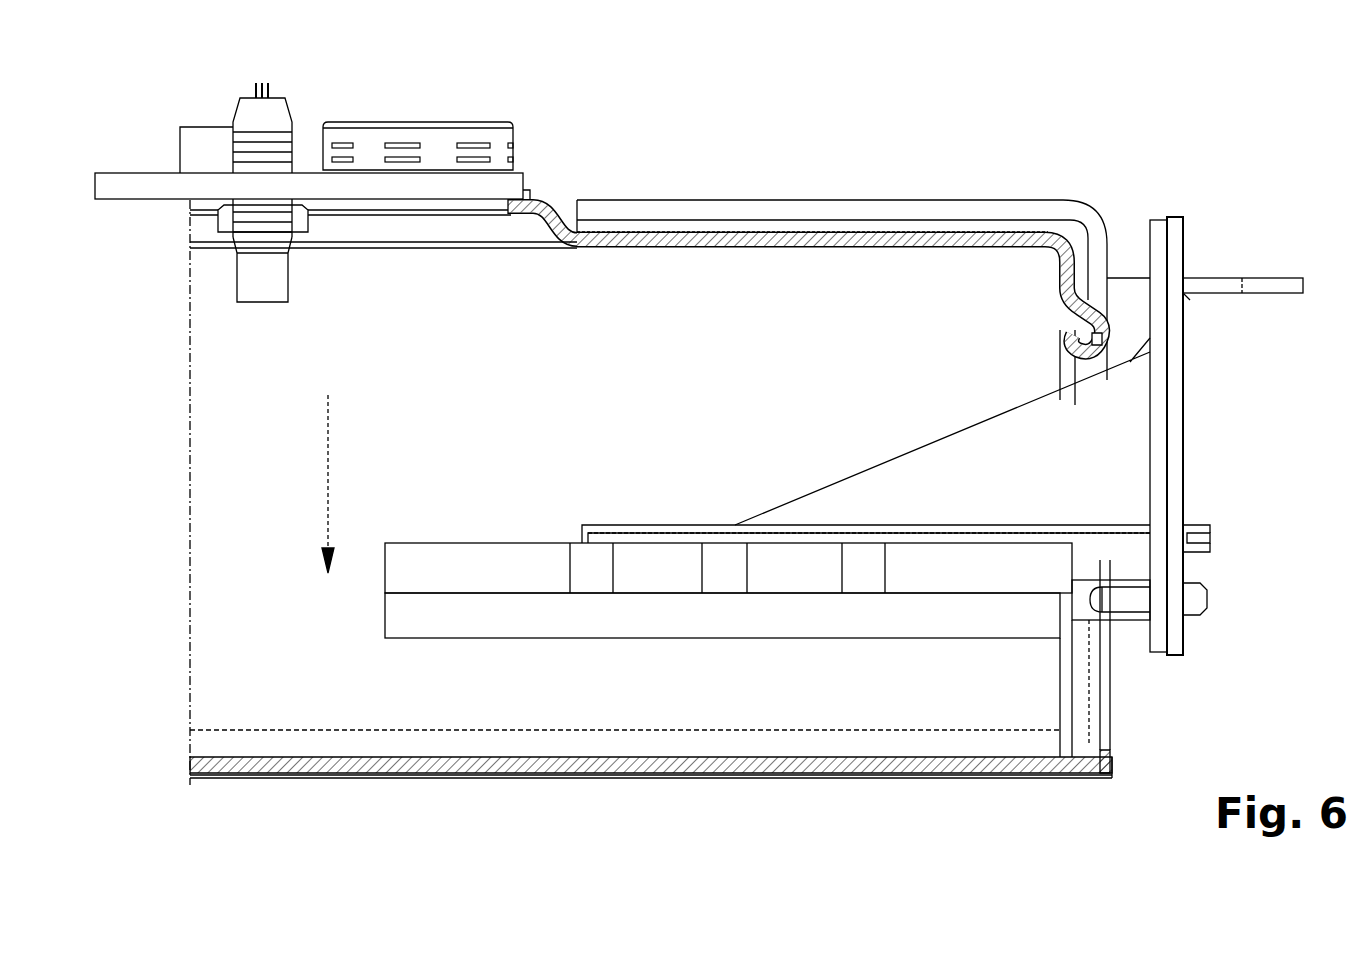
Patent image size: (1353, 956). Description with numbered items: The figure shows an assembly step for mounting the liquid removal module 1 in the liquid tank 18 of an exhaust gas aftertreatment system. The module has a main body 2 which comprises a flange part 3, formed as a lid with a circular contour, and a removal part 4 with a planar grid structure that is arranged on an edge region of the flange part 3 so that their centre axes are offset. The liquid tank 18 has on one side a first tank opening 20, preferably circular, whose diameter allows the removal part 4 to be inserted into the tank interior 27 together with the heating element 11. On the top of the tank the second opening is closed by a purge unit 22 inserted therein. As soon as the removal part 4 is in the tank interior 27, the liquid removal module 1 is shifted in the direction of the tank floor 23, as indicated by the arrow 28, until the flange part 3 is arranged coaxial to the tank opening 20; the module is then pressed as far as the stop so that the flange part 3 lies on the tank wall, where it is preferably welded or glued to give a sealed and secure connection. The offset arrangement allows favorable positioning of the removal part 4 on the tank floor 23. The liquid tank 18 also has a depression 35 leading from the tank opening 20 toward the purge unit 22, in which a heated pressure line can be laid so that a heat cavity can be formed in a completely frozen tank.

The liquid removal module 1 is at (1195, 232).
The main body 2 is at (1132, 597).
The flange part 3 is at (1158, 431).
The removal part 4 is at (730, 625).
The heating element 11 is at (665, 573).
The liquid tank 18 is at (789, 157).
The first tank opening 20 is at (1100, 740).
The purge unit 22 is at (177, 92).
The tank floor 23 is at (528, 745).
The tank interior 27 is at (848, 258).
The arrow 28 is at (328, 450).
The depression 35 is at (740, 228).